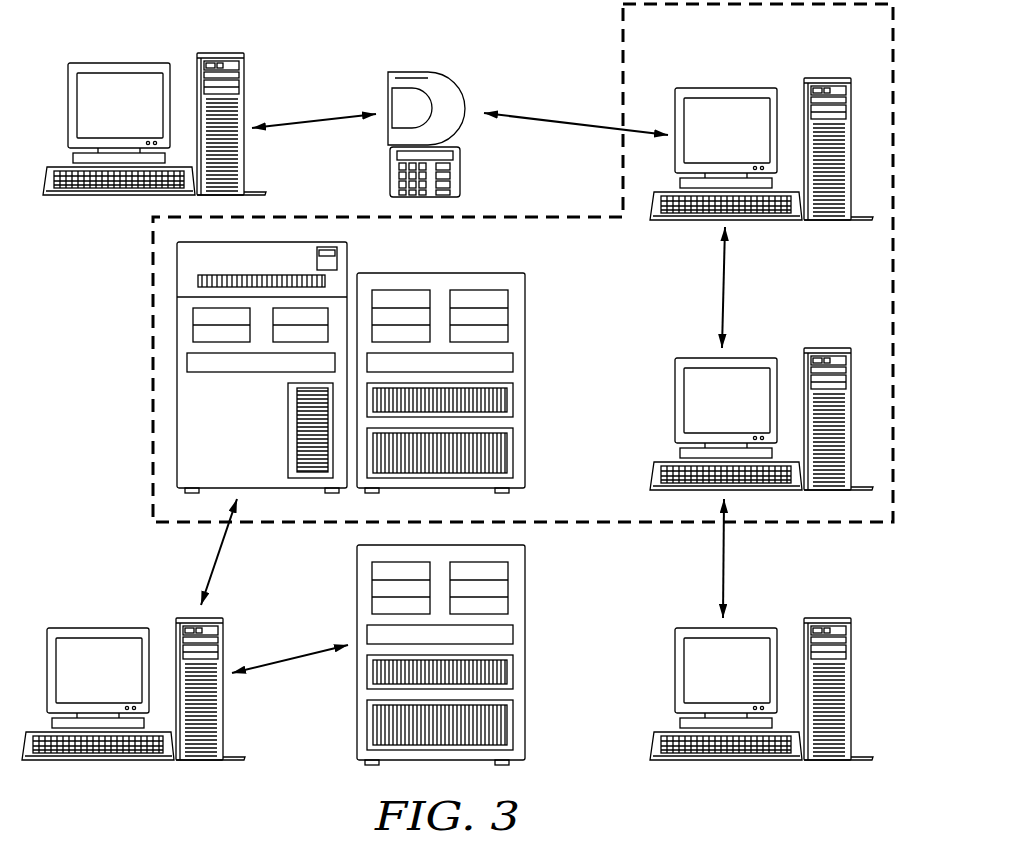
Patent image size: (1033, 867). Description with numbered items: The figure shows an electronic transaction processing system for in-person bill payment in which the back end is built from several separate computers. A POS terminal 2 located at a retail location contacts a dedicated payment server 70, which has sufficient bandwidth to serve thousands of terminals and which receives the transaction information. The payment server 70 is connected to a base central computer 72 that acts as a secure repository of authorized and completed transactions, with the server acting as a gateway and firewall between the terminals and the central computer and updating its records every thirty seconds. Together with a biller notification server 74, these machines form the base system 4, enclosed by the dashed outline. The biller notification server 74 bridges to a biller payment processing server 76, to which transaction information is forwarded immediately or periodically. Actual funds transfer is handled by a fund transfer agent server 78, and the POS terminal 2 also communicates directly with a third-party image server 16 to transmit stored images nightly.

The POS terminal 2 is at (470, 92).
The base system 4 is at (153, 456).
The image server 16 is at (139, 119).
The dedicated payment server 70 is at (743, 140).
The base central computer 72 is at (525, 383).
The biller notification server 74 is at (744, 413).
The biller payment processing server 76 is at (744, 684).
The fund transfer agent server 78 is at (116, 684).